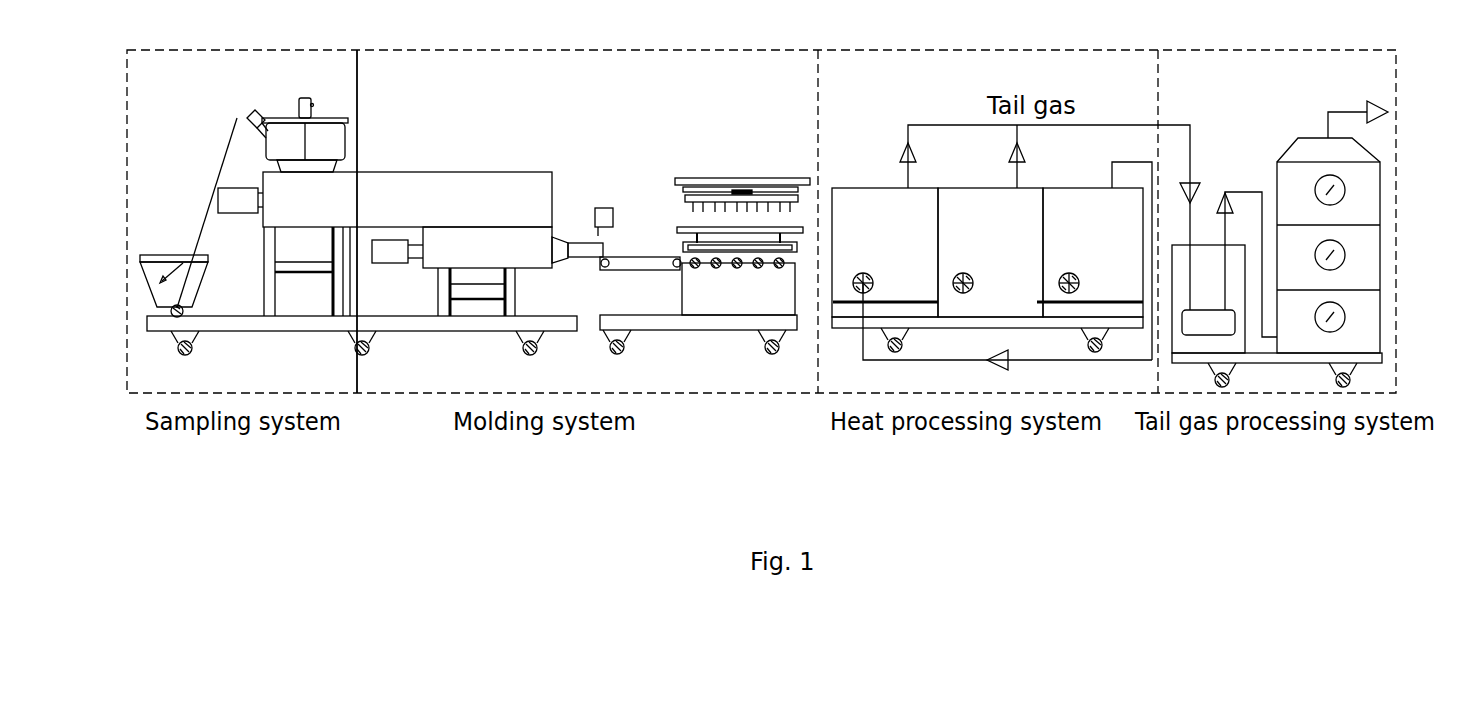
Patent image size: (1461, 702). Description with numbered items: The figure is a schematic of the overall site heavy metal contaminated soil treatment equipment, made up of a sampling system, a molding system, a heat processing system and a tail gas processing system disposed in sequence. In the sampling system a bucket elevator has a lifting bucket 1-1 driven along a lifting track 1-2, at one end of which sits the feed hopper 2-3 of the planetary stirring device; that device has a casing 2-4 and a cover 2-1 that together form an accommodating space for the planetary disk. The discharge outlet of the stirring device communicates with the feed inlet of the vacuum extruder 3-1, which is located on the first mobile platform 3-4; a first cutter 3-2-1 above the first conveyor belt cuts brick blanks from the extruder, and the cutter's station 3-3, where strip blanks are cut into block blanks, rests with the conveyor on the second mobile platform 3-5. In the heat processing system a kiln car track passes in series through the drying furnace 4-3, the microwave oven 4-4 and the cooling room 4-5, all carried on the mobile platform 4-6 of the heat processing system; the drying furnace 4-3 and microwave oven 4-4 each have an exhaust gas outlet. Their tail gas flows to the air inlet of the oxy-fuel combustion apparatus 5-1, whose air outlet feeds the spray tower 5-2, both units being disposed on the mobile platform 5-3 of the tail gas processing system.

The lifting bucket 1-1 is at (158, 267).
The lifting track 1-2 is at (213, 192).
The cover 2-1 is at (285, 118).
The feed hopper 2-3 is at (253, 115).
The casing 2-4 is at (337, 130).
The vacuum extruder 3-1 is at (458, 182).
The first cutter 3-2-1 is at (605, 210).
The cutter's station 3-3 is at (757, 303).
The first mobile platform 3-4 is at (458, 322).
The second mobile platform 3-5 is at (675, 320).
The drying furnace 4-3 is at (885, 207).
The microwave oven 4-4 is at (980, 207).
The cooling room 4-5 is at (1093, 207).
The mobile platform of the heat processing system 4-6 is at (955, 322).
The oxy-fuel combustion apparatus 5-1 is at (1197, 247).
The spray tower 5-2 is at (1332, 148).
The mobile platform of the tail gas processing system 5-3 is at (1317, 357).